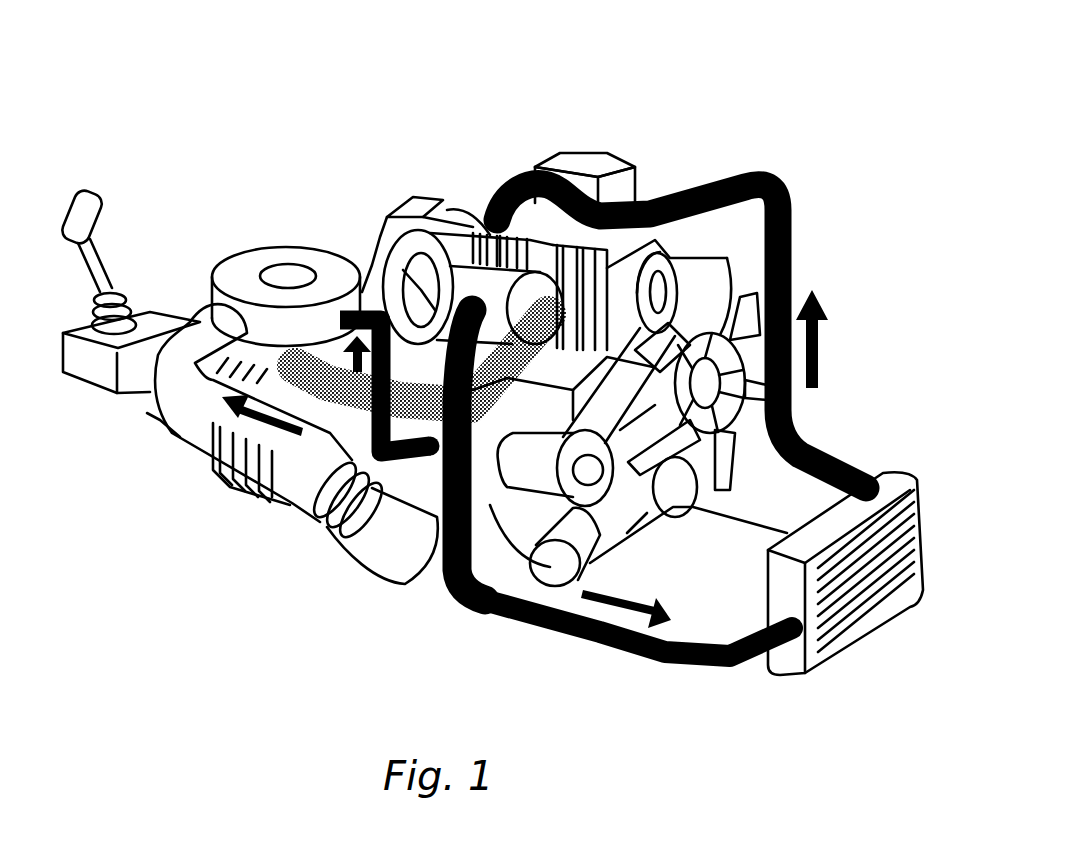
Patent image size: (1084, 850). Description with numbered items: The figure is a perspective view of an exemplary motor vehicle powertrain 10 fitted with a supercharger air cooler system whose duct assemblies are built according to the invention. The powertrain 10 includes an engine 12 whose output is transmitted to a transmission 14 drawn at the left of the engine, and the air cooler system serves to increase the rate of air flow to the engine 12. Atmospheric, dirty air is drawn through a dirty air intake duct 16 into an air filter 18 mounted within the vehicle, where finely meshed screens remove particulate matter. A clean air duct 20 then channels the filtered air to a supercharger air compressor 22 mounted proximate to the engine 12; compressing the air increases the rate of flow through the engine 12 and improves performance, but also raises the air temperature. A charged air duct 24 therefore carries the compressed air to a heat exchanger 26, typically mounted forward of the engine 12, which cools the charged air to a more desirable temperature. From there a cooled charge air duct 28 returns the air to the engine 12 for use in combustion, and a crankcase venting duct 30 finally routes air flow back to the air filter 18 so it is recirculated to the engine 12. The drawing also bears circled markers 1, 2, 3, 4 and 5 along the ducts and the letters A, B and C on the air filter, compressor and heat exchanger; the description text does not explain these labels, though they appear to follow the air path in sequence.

The powertrain 10 is at (705, 66).
The engine 12 is at (470, 205).
The transmission 14 is at (187, 427).
The dirty air intake duct 16 is at (310, 450).
The air filter 18 is at (258, 262).
The clean air duct 20 is at (445, 501).
The supercharger air compressor 22 is at (450, 280).
The charged air duct 24 is at (640, 655).
The heat exchanger 26 is at (810, 655).
The cooled charge air duct 28 is at (796, 212).
The crankcase venting duct 30 is at (352, 262).
The flow stage 1 is at (372, 528).
The flow stage 2 is at (421, 359).
The flow stage 3 is at (530, 403).
The flow stage 4 is at (710, 621).
The flow stage 5 is at (860, 448).
The location A is at (292, 323).
The location B is at (490, 284).
The location C is at (890, 648).